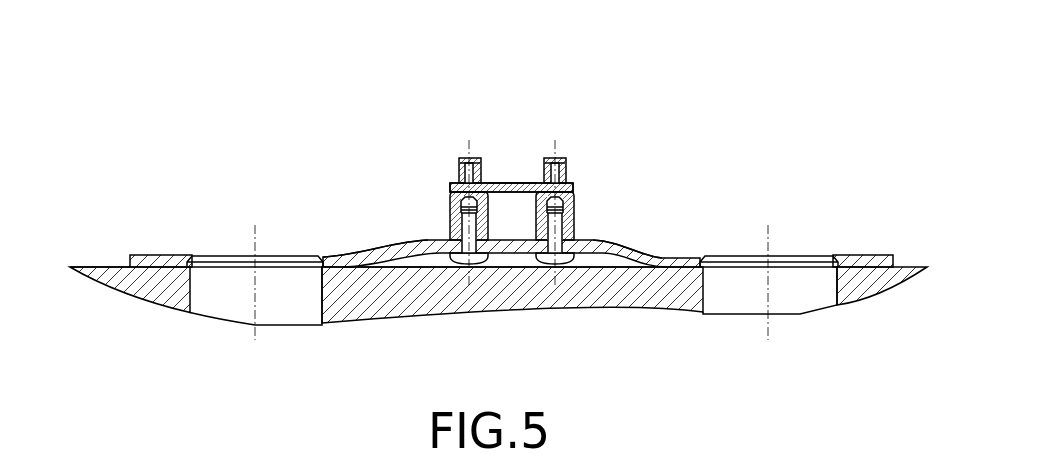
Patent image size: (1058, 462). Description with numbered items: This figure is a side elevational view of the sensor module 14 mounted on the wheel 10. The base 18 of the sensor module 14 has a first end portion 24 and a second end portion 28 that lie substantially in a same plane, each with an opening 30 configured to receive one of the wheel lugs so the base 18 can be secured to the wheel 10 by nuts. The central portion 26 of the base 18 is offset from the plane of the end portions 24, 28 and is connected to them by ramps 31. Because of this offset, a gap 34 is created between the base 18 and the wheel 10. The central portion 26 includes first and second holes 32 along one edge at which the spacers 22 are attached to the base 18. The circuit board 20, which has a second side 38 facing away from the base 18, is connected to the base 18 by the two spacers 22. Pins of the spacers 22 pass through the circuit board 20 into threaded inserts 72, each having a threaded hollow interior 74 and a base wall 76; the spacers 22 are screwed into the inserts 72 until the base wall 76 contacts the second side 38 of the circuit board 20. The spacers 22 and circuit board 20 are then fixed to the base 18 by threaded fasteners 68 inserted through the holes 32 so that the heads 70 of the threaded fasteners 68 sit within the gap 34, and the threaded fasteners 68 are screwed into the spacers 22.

The wheel 10 is at (162, 286).
The sensor module 14 is at (525, 201).
The base 18 is at (138, 253).
The circuit board 20 is at (482, 183).
The spacers 22 is at (503, 183).
The first end portion 24 is at (167, 254).
The central portion 26 is at (443, 239).
The second end portion 28 is at (843, 260).
The opening 30 is at (312, 258).
The ramps 31 is at (400, 241).
The holes 32 is at (565, 243).
The gap 34 is at (432, 260).
The second side 38 is at (530, 183).
The threaded fasteners 68 is at (574, 215).
The heads 70 is at (475, 262).
The threaded inserts 72 is at (462, 160).
The threaded hollow interior 74 is at (457, 162).
The base wall 76 is at (455, 175).